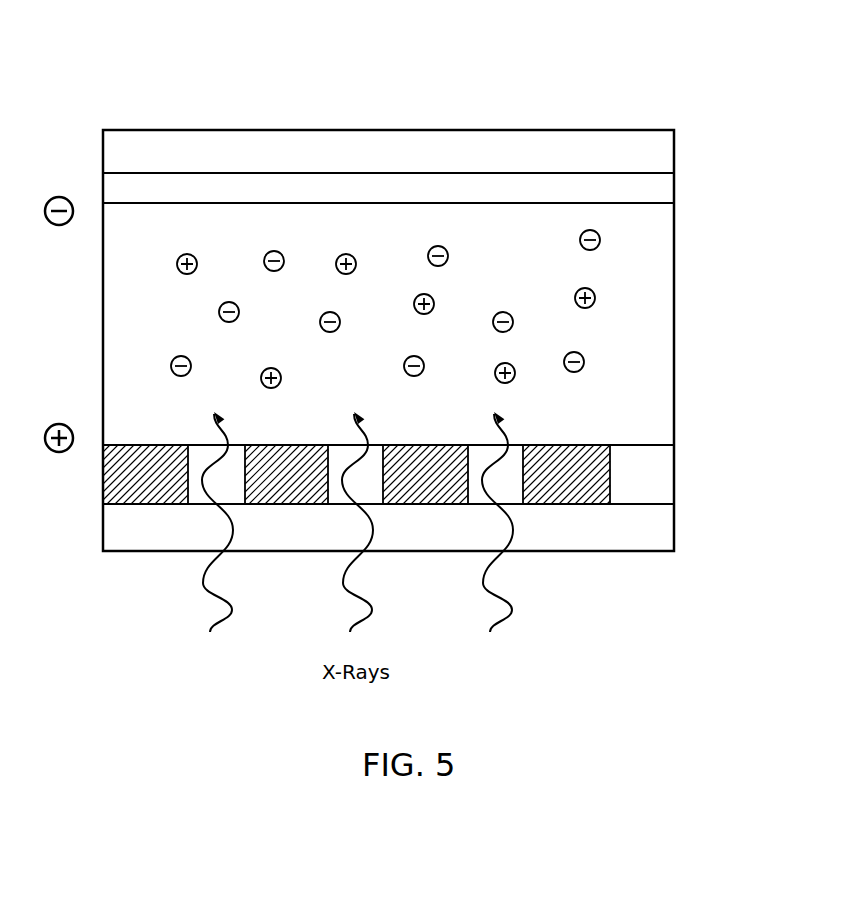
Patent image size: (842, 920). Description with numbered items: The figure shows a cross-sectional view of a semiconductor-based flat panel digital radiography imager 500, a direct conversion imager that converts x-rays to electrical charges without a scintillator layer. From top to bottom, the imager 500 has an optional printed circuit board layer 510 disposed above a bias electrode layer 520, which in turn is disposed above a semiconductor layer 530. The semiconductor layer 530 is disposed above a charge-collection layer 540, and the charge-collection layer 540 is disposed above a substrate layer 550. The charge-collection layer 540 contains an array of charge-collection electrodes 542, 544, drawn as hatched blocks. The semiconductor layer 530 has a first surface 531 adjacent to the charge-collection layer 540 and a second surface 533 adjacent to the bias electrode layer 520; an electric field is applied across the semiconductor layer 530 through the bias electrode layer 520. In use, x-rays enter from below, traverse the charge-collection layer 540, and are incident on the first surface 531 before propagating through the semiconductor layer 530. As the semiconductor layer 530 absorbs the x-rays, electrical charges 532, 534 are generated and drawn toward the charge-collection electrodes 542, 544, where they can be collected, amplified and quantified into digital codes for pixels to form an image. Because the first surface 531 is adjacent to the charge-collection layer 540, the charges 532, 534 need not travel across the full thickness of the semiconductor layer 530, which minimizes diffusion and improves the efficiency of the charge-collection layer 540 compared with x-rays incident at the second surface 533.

The imager 500 is at (621, 58).
The printed circuit board layer 510 is at (655, 152).
The bias electrode layer 520 is at (655, 185).
The second surface 533 is at (660, 199).
The semiconductor layer 530 is at (645, 316).
The charge 534 is at (177, 264).
The charge 532 is at (171, 366).
The first surface 531 is at (660, 443).
The charge-collection layer 540 is at (660, 476).
The charge-collection electrode 542 is at (300, 478).
The charge-collection electrode 544 is at (157, 478).
The substrate layer 550 is at (655, 522).